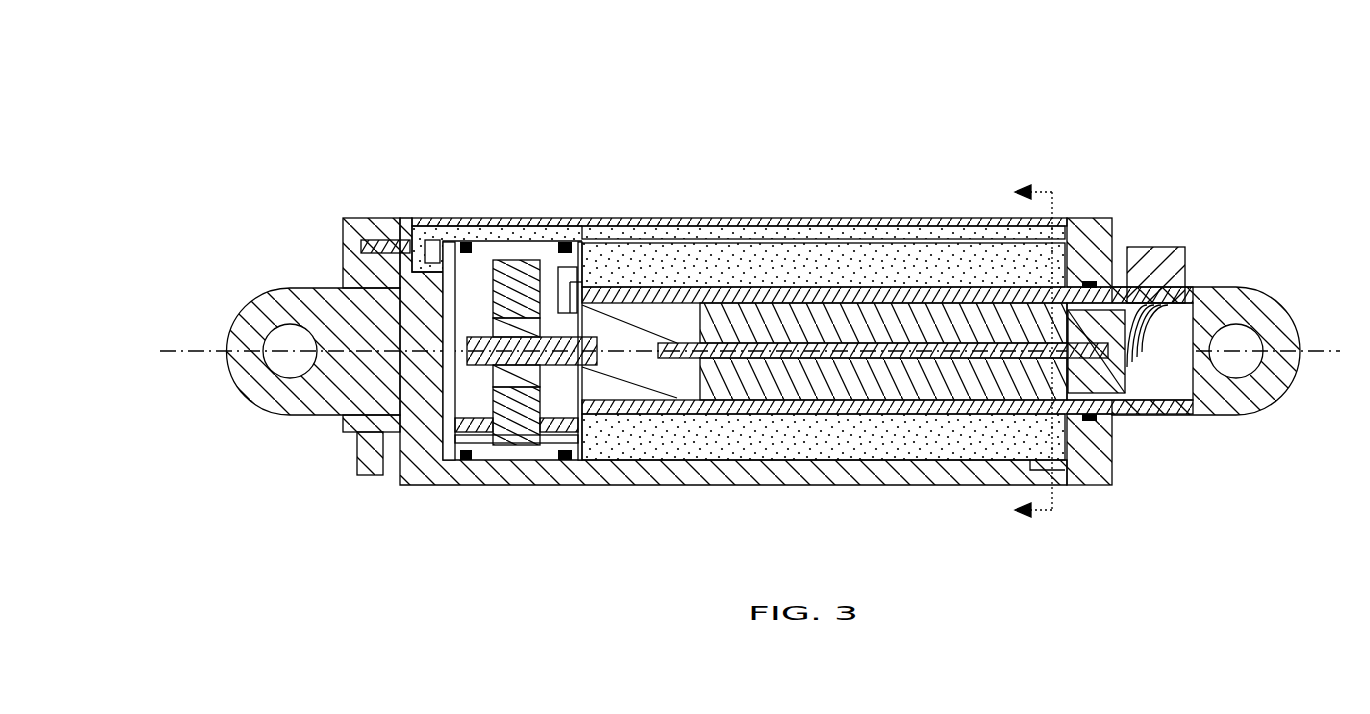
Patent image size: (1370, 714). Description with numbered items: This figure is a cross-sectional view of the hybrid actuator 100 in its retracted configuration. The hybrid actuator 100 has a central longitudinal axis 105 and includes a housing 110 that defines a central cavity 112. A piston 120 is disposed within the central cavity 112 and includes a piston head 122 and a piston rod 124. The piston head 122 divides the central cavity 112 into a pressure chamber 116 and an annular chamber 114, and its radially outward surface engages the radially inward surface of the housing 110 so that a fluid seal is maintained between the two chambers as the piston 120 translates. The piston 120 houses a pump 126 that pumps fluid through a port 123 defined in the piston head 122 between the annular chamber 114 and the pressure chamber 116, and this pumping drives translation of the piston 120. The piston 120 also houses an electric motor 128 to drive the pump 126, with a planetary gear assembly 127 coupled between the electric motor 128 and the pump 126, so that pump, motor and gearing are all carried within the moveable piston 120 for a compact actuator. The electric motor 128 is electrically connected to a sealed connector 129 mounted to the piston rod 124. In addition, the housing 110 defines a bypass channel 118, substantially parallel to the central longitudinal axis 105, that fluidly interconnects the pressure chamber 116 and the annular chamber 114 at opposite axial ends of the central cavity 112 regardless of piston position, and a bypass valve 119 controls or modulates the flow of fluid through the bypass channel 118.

The hybrid actuator 100 is at (750, 281).
The central longitudinal axis 105 is at (197, 352).
The housing 110 is at (622, 233).
The central cavity 112 is at (820, 250).
The annular chamber 114 is at (658, 257).
The pressure chamber 116 is at (443, 406).
The bypass channel 118 is at (445, 238).
The bypass valve 119 is at (385, 246).
The piston 120 is at (705, 428).
The piston head 122 is at (543, 463).
The port 123 is at (563, 292).
The piston rod 124 is at (734, 405).
The pump 126 is at (515, 248).
The planetary gear assembly 127 is at (675, 297).
The electric motor 128 is at (970, 378).
The sealed connector 129 is at (1157, 262).